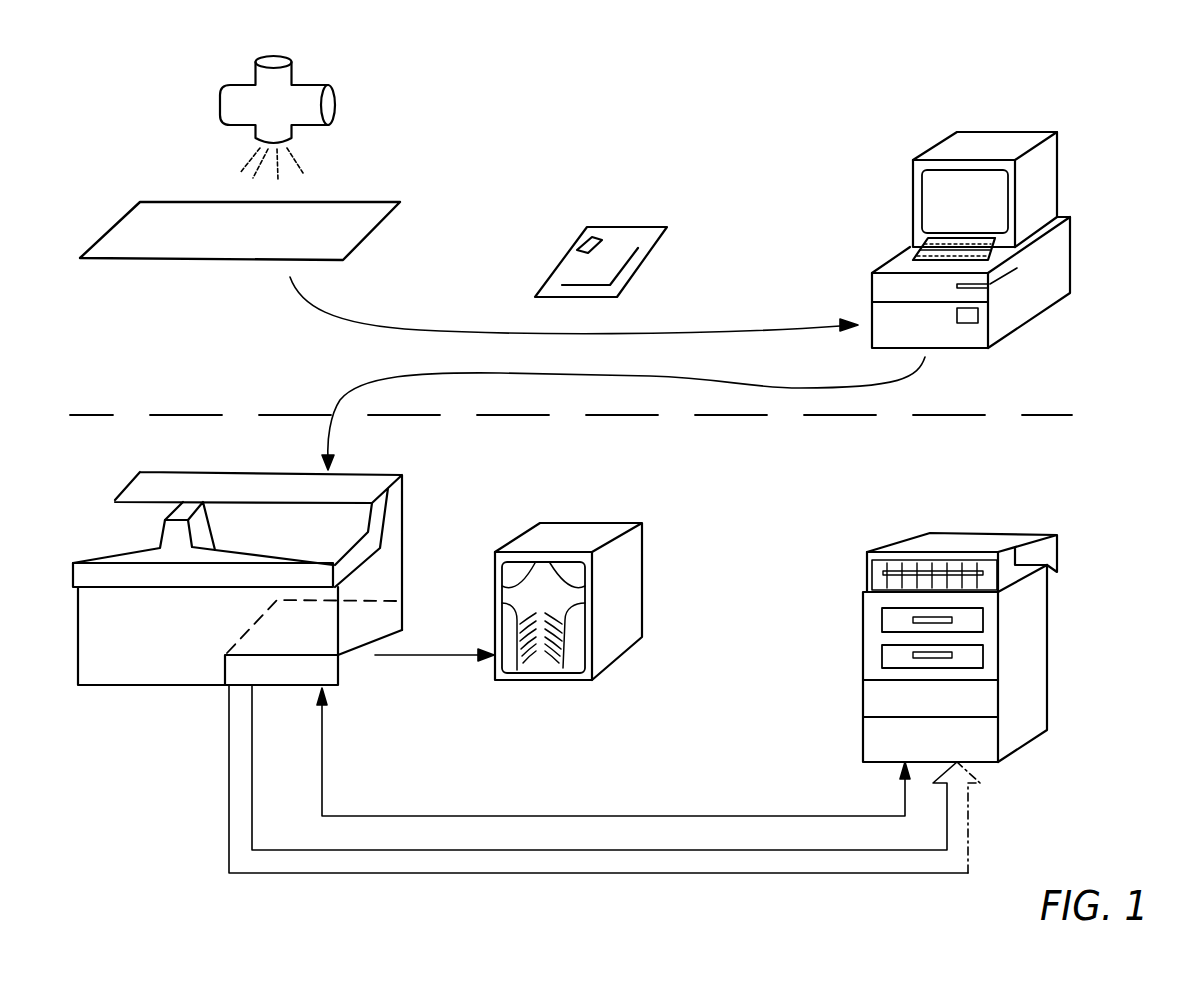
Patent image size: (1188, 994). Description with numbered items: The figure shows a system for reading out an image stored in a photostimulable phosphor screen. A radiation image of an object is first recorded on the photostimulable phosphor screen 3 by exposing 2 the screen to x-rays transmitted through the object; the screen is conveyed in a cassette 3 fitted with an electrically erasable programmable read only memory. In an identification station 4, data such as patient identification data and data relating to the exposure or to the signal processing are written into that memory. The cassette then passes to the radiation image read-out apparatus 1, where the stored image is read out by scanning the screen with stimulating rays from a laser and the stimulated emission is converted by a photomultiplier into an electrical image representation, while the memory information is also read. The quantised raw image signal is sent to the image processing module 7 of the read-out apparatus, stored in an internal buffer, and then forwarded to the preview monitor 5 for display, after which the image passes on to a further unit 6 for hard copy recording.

The radiation image read-out apparatus 1 is at (125, 537).
The exposing 2 is at (293, 103).
The photostimulable phosphor screen 3 is at (615, 240).
The identification station 4 is at (1050, 283).
The preview monitor 5 is at (618, 583).
The printer / archive unit 6 is at (1012, 737).
The image processing module 7 is at (347, 665).